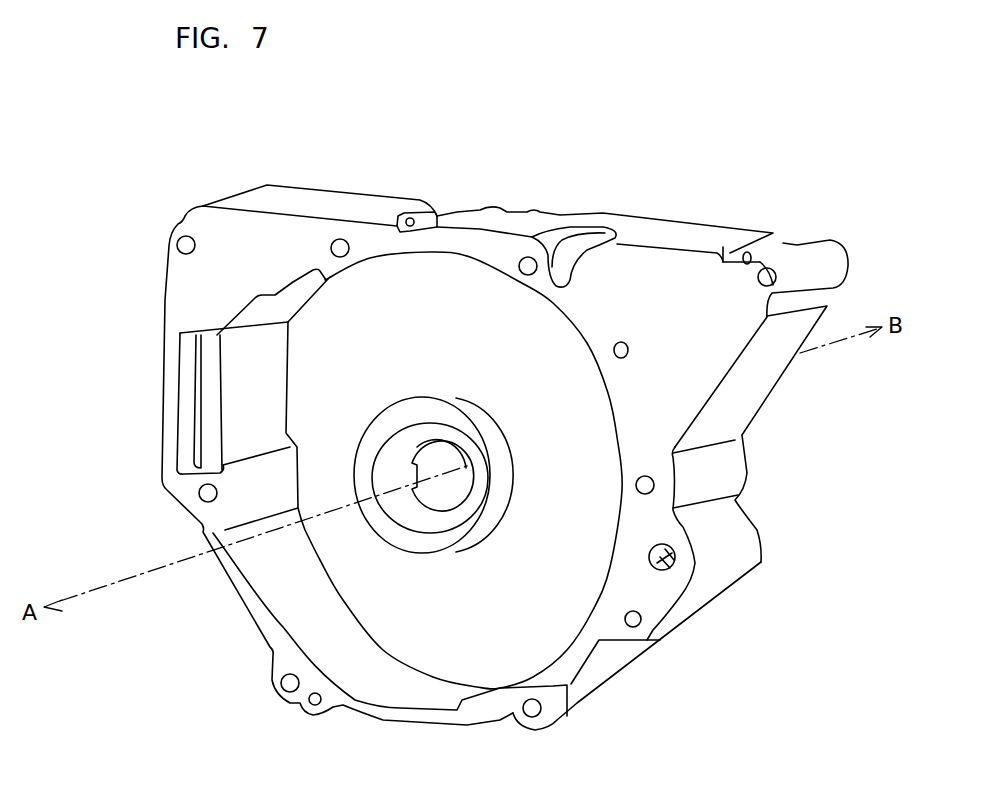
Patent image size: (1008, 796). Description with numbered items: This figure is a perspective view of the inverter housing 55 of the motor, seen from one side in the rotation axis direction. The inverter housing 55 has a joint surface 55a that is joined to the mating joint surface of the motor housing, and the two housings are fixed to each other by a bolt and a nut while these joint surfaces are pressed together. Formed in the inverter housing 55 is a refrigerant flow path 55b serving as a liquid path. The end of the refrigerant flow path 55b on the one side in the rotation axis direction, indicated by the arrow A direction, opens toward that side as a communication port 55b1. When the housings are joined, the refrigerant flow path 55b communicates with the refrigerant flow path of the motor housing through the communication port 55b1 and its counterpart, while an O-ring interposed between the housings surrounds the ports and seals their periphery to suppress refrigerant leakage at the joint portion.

The inverter housing 55 is at (636, 213).
The joint surface 55a is at (395, 238).
The refrigerant flow path 55b is at (664, 570).
The communication port 55b1 is at (656, 572).